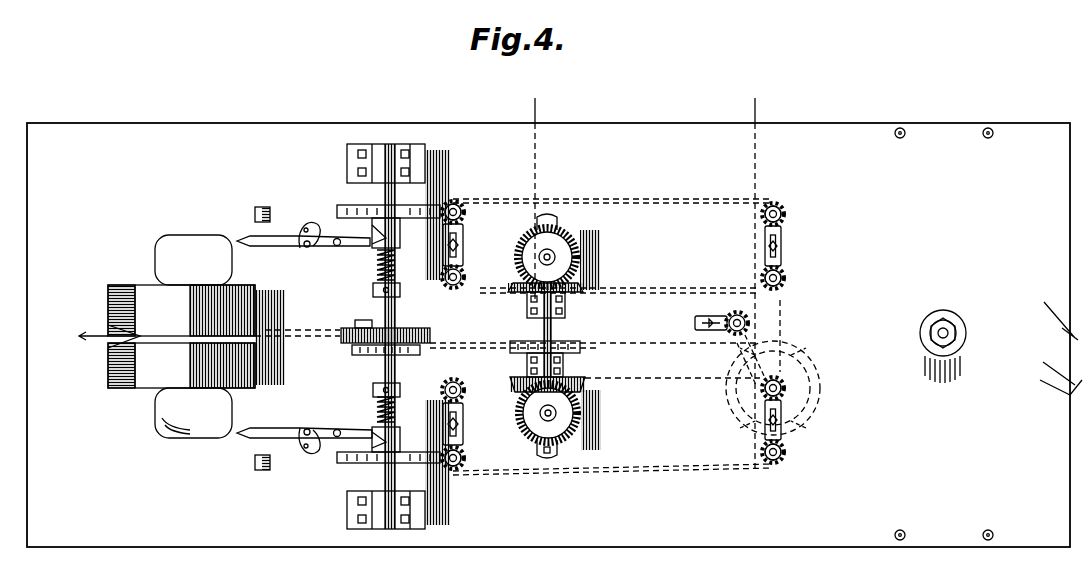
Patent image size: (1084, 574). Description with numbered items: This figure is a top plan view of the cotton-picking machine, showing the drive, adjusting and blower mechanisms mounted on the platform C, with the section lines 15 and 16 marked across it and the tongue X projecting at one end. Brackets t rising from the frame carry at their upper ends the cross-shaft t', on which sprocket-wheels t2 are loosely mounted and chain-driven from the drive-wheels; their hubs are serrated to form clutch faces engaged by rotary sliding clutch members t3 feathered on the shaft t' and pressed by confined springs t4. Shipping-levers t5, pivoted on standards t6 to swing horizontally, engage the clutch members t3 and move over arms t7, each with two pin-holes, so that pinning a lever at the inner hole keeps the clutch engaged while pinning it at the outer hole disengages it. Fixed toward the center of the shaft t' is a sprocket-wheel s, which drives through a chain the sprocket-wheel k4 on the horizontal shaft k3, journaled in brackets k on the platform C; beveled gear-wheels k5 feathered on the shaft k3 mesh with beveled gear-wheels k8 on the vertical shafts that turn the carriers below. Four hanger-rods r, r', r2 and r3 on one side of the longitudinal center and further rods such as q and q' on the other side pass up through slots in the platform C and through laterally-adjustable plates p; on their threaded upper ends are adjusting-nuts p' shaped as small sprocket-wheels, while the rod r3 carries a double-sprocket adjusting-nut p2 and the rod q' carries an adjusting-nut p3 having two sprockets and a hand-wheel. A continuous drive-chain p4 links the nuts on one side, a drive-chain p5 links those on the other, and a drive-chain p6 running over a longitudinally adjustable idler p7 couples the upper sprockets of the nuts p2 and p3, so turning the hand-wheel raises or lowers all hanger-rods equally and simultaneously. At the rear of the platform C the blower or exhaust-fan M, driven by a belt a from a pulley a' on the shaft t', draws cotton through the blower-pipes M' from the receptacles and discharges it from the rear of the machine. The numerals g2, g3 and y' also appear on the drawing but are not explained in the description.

The section line 15 is at (770, 102).
The section line 16 is at (550, 102).
The platform C is at (512, 226).
The blower or exhaust-fan M is at (182, 334).
The blower-pipes M' is at (193, 337).
The belt a is at (297, 319).
The pulley a' is at (385, 319).
The sprocket-wheel s is at (405, 354).
The brackets t is at (402, 335).
The cross-shaft t' is at (396, 336).
The sprocket-wheels t2 is at (438, 196).
The rotary sliding clutch members t3 is at (395, 238).
The springs t4 is at (378, 268).
The shipping-levers t5 is at (325, 250).
The standards t6 is at (336, 240).
The arms t7 is at (306, 222).
The hanger-rod r is at (471, 197).
The hanger-rod r2 is at (453, 288).
The hanger-rod r' is at (792, 210).
The hanger-rod r3 is at (786, 278).
The hanger-rod q is at (468, 397).
The hanger-rod q' is at (741, 399).
The gear wheel g2 is at (456, 470).
The gear wheel g3 is at (768, 466).
The laterally-adjustable plates p is at (612, 336).
The adjusting-nuts p' is at (644, 315).
The adjusting-nut p2 is at (782, 270).
The adjusting-nut p3 is at (782, 388).
The drive-chain p4 is at (637, 196).
The drive-chain p5 is at (640, 472).
The drive-chain p6 is at (790, 326).
The idler p7 is at (722, 330).
The brackets k is at (560, 446).
The horizontal shaft k3 is at (540, 328).
The sprocket-wheel k4 is at (572, 336).
The beveled gear-wheels k5 is at (578, 288).
The beveled gear-wheels k8 is at (562, 246).
The bearing y' is at (959, 333).
The tongue X is at (1044, 348).